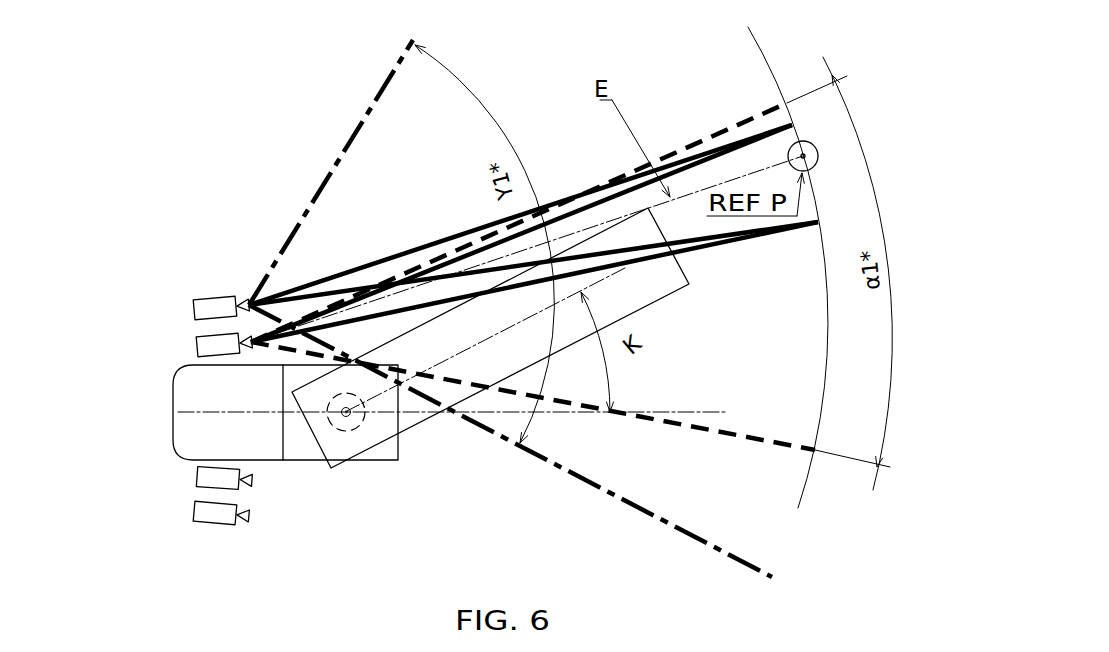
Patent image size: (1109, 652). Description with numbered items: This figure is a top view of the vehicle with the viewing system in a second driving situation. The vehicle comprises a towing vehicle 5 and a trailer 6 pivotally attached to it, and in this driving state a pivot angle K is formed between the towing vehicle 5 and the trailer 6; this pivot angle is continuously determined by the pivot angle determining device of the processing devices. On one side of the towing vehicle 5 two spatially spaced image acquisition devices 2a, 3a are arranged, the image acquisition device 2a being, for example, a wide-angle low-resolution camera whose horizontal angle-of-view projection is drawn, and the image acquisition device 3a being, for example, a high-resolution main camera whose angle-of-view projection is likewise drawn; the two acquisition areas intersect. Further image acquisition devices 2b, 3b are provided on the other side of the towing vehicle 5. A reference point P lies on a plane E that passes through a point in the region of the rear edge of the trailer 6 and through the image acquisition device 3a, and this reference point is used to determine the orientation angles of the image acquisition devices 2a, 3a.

The image acquisition device 2a is at (192, 310).
The image acquisition device 3a is at (192, 345).
The image acquisition device 3b is at (193, 478).
The image acquisition device 2b is at (190, 515).
The towing vehicle 5 is at (187, 425).
The trailer 6 is at (614, 307).